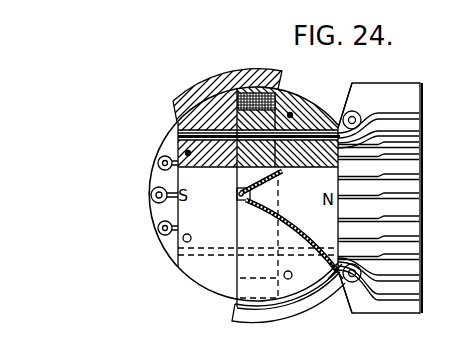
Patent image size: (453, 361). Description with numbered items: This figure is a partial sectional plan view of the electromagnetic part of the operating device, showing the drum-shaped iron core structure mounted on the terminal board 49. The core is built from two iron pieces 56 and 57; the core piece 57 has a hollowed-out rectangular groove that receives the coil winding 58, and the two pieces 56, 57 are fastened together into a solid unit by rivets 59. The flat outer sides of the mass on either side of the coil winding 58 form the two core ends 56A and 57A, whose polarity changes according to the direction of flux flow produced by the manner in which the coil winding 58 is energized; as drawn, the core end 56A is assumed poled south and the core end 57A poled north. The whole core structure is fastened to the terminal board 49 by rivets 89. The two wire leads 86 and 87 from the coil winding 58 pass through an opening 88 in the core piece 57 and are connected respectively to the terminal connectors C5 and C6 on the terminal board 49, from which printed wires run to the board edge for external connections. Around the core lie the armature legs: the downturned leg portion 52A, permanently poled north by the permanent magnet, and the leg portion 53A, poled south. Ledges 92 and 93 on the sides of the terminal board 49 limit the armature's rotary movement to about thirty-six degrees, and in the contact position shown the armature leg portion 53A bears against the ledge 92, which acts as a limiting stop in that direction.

The terminal board 49 is at (394, 313).
The downturned leg portion of the armature structure 52A is at (222, 80).
The leg portion of the armature structure 53A is at (262, 318).
The core piece 56 is at (208, 106).
The core end 56A is at (152, 178).
The core piece 57 is at (289, 117).
The core end 57A is at (368, 167).
The coil winding 58 is at (258, 92).
The rivets 59 is at (178, 131).
The wire lead 86 is at (272, 182).
The wire lead 87 is at (292, 221).
The opening 88 is at (243, 201).
The rivets 89 is at (292, 114).
The ledge 92 is at (347, 302).
The ledge 93 is at (350, 90).
The terminal connector C5 is at (358, 109).
The terminal connector C6 is at (356, 280).